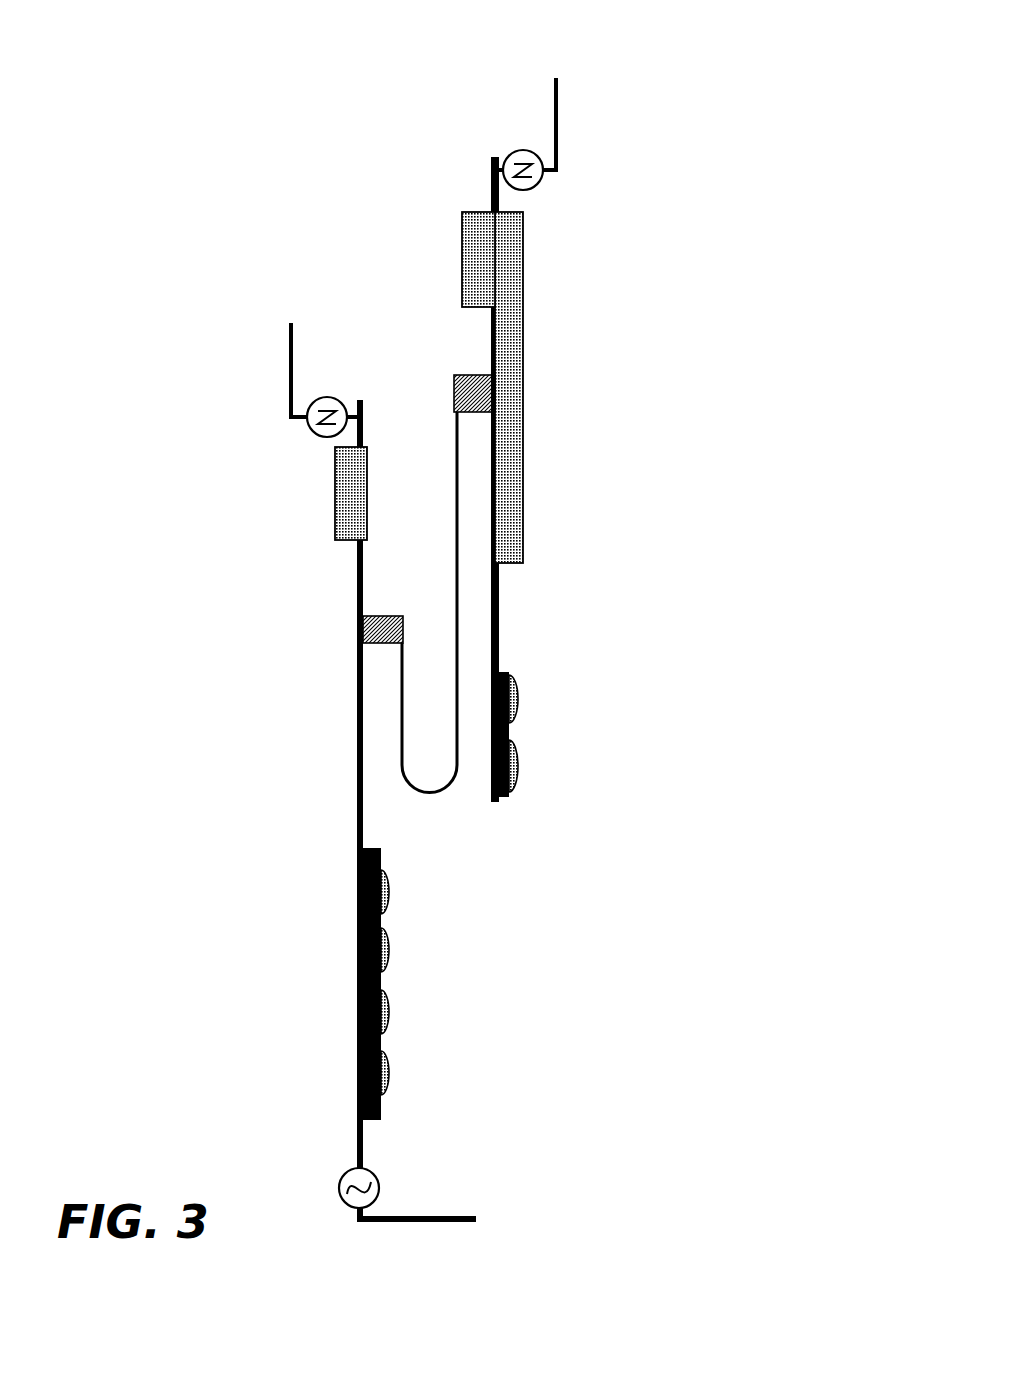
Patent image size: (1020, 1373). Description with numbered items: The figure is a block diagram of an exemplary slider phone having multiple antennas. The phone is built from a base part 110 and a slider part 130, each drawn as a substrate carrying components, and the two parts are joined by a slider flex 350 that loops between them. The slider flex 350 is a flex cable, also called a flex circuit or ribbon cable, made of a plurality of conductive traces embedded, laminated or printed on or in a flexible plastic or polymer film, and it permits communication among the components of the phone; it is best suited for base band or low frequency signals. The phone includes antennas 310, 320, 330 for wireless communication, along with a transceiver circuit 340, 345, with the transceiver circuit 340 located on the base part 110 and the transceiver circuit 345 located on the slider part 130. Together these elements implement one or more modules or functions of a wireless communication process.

The base part 110 is at (355, 722).
The slider part 130 is at (523, 497).
The antenna 310 is at (291, 348).
The antenna 320 is at (558, 97).
The antenna 330 is at (435, 1222).
The transceiver circuit 340 is at (348, 487).
The transceiver circuit 345 is at (477, 232).
The slider flex 350 is at (428, 792).